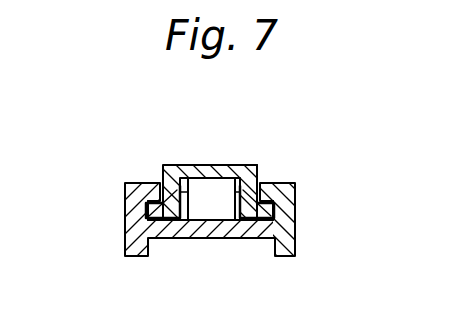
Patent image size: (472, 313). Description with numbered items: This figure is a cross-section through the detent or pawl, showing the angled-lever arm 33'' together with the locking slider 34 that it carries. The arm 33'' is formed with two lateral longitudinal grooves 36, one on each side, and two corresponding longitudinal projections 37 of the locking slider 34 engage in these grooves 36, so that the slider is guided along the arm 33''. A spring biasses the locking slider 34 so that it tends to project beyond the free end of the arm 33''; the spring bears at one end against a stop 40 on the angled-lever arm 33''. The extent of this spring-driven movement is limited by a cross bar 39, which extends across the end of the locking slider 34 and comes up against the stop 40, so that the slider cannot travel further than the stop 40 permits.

The angled-lever arm 33'' is at (252, 234).
The locking slider 34 is at (185, 171).
The lateral longitudinal groove 36 is at (150, 213).
The longitudinal projection 37 is at (158, 205).
The cross bar 39 is at (256, 182).
The stop 40 is at (224, 183).